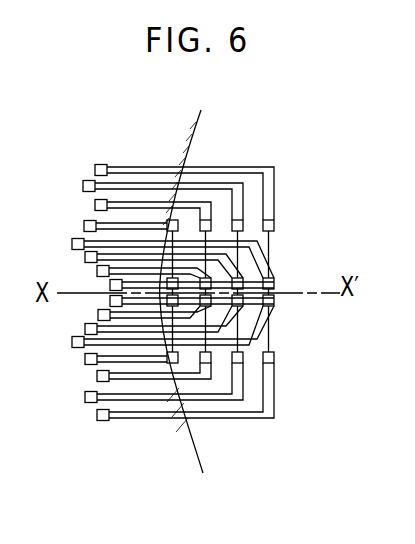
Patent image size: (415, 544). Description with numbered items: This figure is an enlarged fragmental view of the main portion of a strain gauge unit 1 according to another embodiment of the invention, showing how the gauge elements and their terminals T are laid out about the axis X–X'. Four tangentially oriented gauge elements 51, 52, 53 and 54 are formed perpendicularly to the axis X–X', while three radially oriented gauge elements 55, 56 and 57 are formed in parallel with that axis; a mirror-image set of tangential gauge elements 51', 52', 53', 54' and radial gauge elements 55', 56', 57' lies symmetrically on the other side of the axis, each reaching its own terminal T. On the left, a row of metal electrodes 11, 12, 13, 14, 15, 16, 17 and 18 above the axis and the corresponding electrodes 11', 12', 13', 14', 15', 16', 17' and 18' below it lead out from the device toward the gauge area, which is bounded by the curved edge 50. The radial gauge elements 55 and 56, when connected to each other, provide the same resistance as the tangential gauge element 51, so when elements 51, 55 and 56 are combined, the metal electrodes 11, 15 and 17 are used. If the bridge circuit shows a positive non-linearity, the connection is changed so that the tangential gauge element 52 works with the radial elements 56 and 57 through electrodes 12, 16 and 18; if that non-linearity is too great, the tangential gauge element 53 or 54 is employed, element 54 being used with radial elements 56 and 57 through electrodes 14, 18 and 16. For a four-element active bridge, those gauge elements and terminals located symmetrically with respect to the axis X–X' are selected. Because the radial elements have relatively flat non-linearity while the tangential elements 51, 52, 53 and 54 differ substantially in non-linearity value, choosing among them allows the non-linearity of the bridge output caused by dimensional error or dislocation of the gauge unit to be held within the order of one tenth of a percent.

The lead frame 1 is at (40, 370).
The metal electrode 11 is at (103, 207).
The electrode 12 is at (117, 192).
The lead 13 is at (145, 181).
The electrode 14 is at (172, 171).
The metal electrode 15 is at (163, 276).
The electrode 16 is at (127, 261).
The metal electrode 17 is at (140, 251).
The electrode 18 is at (147, 241).
The lead 11' is at (104, 380).
The lead 12' is at (122, 396).
The lead 13' is at (152, 406).
The lead 14' is at (182, 413).
The lead 15' is at (163, 302).
The lead 16' is at (124, 322).
The lead 17' is at (123, 327).
The lead 18' is at (163, 342).
The semiconductor chip edge 50 is at (193, 121).
The tangential gauge element 51 is at (200, 214).
The tangential gauge element 52 is at (232, 214).
The tangential gauge element 53 is at (264, 214).
The tangential gauge element 54 is at (294, 250).
The radial gauge element 55 is at (285, 238).
The radial gauge element 56 is at (296, 261).
The radial gauge element 57 is at (306, 304).
The wiring conductor 51' is at (154, 377).
The wiring conductor 52' is at (242, 376).
The wiring conductor 53' is at (294, 357).
The connecting conductor 54' is at (310, 330).
The connecting conductor 55' is at (216, 377).
The connecting conductor 56' is at (289, 394).
The connecting conductor 57' is at (290, 322).
The terminal T is at (277, 222).